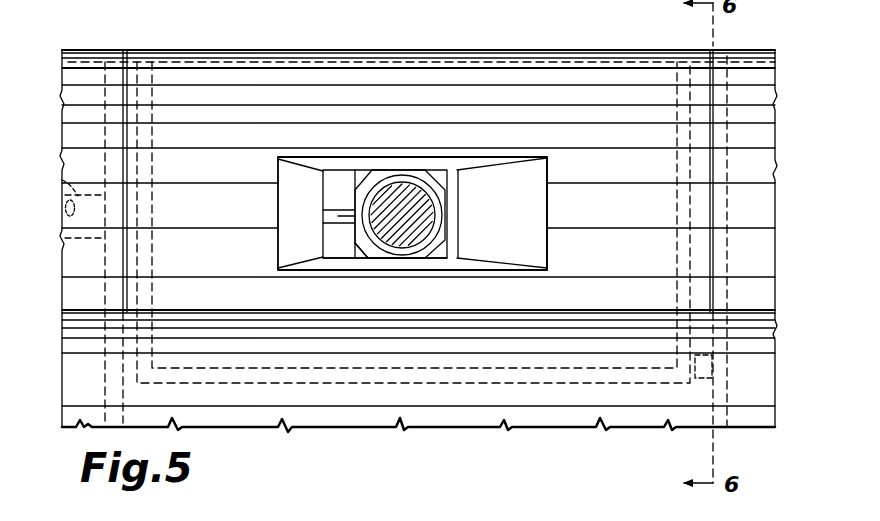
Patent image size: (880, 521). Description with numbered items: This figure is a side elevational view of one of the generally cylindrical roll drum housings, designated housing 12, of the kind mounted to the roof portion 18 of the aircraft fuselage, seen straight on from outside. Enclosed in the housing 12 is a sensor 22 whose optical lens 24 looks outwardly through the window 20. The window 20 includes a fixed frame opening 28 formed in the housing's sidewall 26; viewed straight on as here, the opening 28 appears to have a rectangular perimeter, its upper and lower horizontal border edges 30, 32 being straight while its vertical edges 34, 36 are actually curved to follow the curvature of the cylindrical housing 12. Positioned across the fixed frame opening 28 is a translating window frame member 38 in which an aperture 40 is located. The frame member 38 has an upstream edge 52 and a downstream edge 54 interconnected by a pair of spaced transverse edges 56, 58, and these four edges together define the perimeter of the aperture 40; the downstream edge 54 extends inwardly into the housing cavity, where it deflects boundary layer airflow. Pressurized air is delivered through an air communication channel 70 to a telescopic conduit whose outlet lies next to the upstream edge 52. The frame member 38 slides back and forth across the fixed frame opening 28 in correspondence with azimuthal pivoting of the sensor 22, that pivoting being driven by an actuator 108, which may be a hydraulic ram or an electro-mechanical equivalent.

The housing 12 is at (149, 46).
The roof portion 18 is at (581, 398).
The window 20 is at (478, 152).
The sensor 22 is at (434, 248).
The optical lens 24 is at (399, 198).
The sidewall 26 is at (227, 61).
The fixed frame opening 28 is at (325, 168).
The upper horizontal border edge 30 is at (433, 262).
The lower horizontal border edge 32 is at (430, 163).
The vertical edge 34 is at (539, 200).
The vertical edge 36 is at (283, 191).
The translating window frame member 38 is at (502, 188).
The aperture 40 is at (337, 248).
The upstream edge 52 is at (323, 193).
The downstream edge 54 is at (453, 241).
The transverse edge 56 is at (353, 169).
The transverse edge 58 is at (362, 259).
The air communication channel 70 is at (62, 178).
The actuator 108 is at (296, 264).